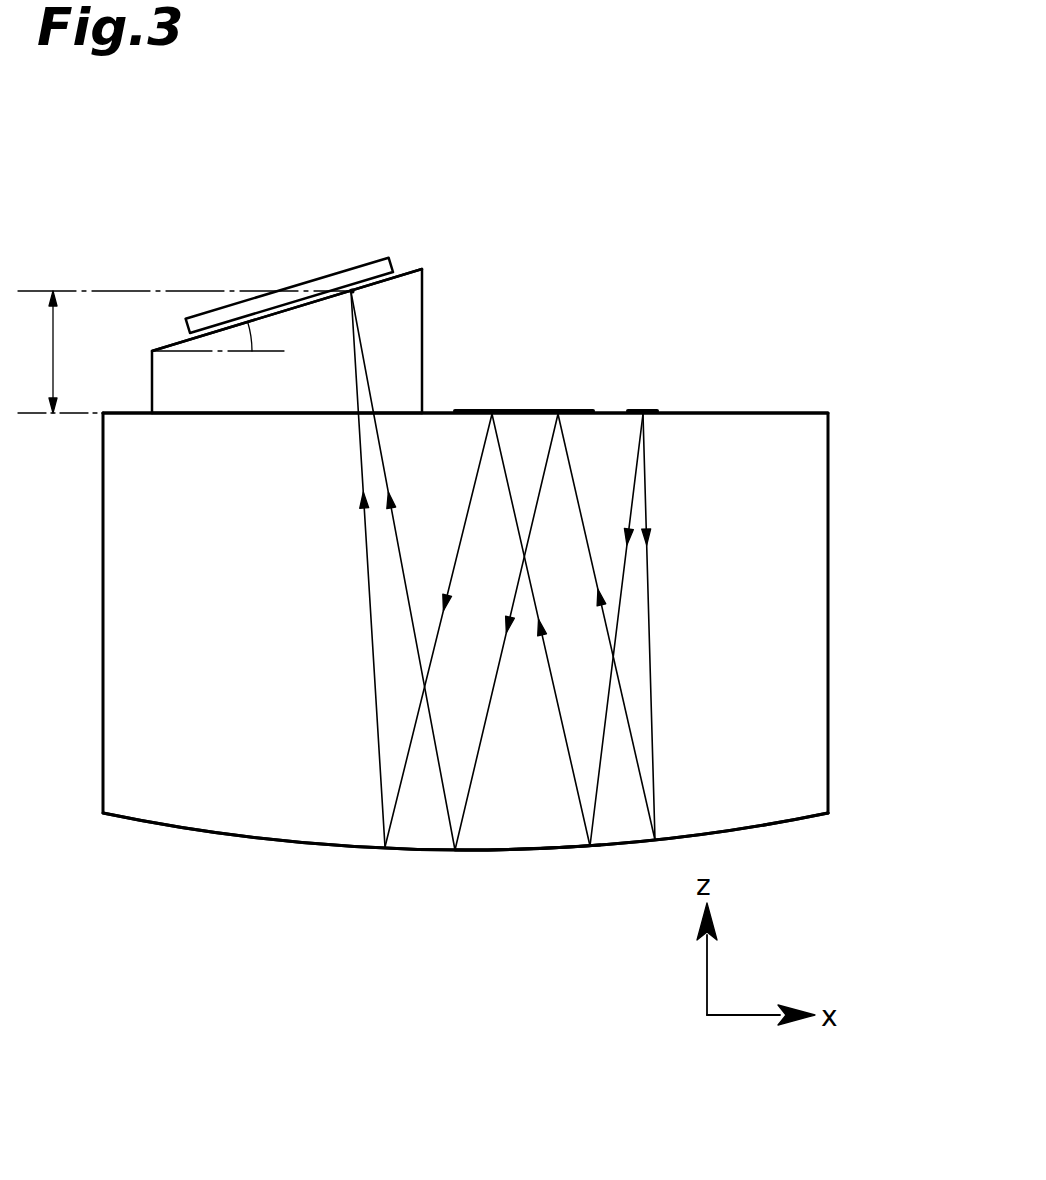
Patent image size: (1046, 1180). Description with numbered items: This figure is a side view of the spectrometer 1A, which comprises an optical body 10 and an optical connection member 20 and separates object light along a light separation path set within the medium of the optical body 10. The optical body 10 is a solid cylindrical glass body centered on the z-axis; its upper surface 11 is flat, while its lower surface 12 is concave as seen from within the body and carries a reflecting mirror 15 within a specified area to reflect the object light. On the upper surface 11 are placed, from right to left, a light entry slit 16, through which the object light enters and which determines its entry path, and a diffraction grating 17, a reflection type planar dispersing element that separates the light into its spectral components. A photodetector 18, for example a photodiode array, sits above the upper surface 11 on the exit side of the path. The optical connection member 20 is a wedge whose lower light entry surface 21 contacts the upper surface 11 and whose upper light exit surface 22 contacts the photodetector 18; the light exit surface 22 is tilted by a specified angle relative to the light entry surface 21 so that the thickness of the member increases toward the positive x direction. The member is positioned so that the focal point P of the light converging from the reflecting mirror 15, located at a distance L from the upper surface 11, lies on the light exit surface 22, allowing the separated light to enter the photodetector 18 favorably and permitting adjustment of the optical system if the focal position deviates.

The spectrometer 1A is at (645, 295).
The optical body 10 is at (812, 535).
The upper surface 11 is at (807, 414).
The lower surface 12 is at (793, 815).
The reflecting mirror 15 is at (530, 853).
The light entry slit 16 is at (648, 410).
The diffraction grating 17 is at (523, 410).
The photodetector 18 is at (317, 278).
The optical connection member 20 is at (410, 330).
The light entry surface 21 is at (407, 412).
The light exit surface 22 is at (425, 278).
The focal point P is at (352, 291).
The distance L is at (38, 352).